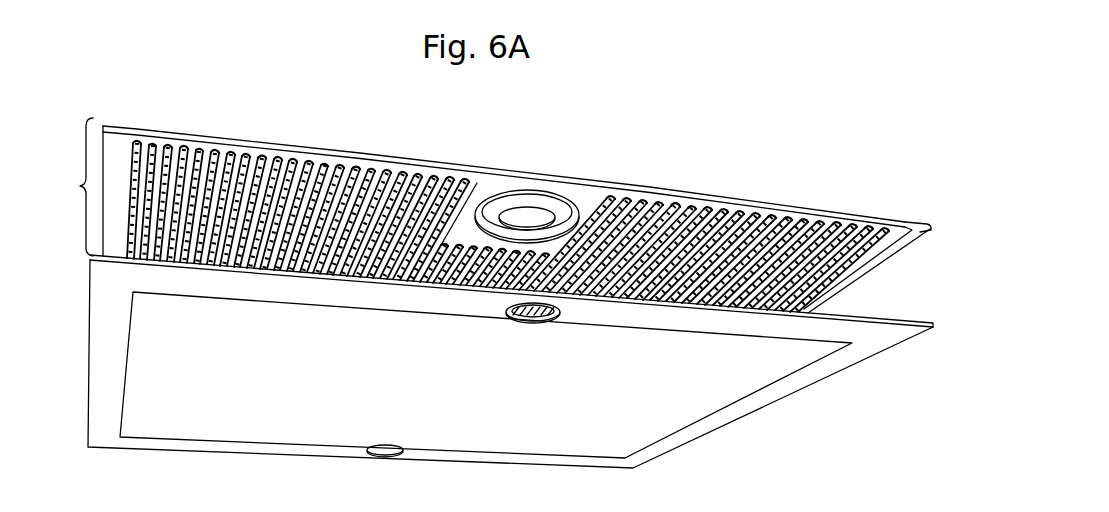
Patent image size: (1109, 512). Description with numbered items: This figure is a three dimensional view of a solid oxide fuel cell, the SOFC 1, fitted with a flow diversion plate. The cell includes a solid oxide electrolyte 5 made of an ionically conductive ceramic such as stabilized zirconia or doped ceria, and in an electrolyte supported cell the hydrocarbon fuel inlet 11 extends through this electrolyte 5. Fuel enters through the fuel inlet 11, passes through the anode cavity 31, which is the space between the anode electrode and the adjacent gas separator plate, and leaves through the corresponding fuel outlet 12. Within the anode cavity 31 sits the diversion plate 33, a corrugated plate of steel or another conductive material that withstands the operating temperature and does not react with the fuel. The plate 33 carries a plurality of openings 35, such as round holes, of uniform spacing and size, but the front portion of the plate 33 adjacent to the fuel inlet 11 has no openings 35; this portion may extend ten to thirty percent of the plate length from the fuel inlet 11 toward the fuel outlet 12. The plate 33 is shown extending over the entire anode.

The SOFC 1 is at (780, 408).
The solid oxide electrolyte 5 is at (879, 308).
The hydrocarbon fuel inlet 11 is at (570, 312).
The fuel outlet 12 is at (381, 460).
The anode cavity 31 is at (81, 186).
The diversion plate 33 is at (737, 199).
The openings 35 is at (291, 161).